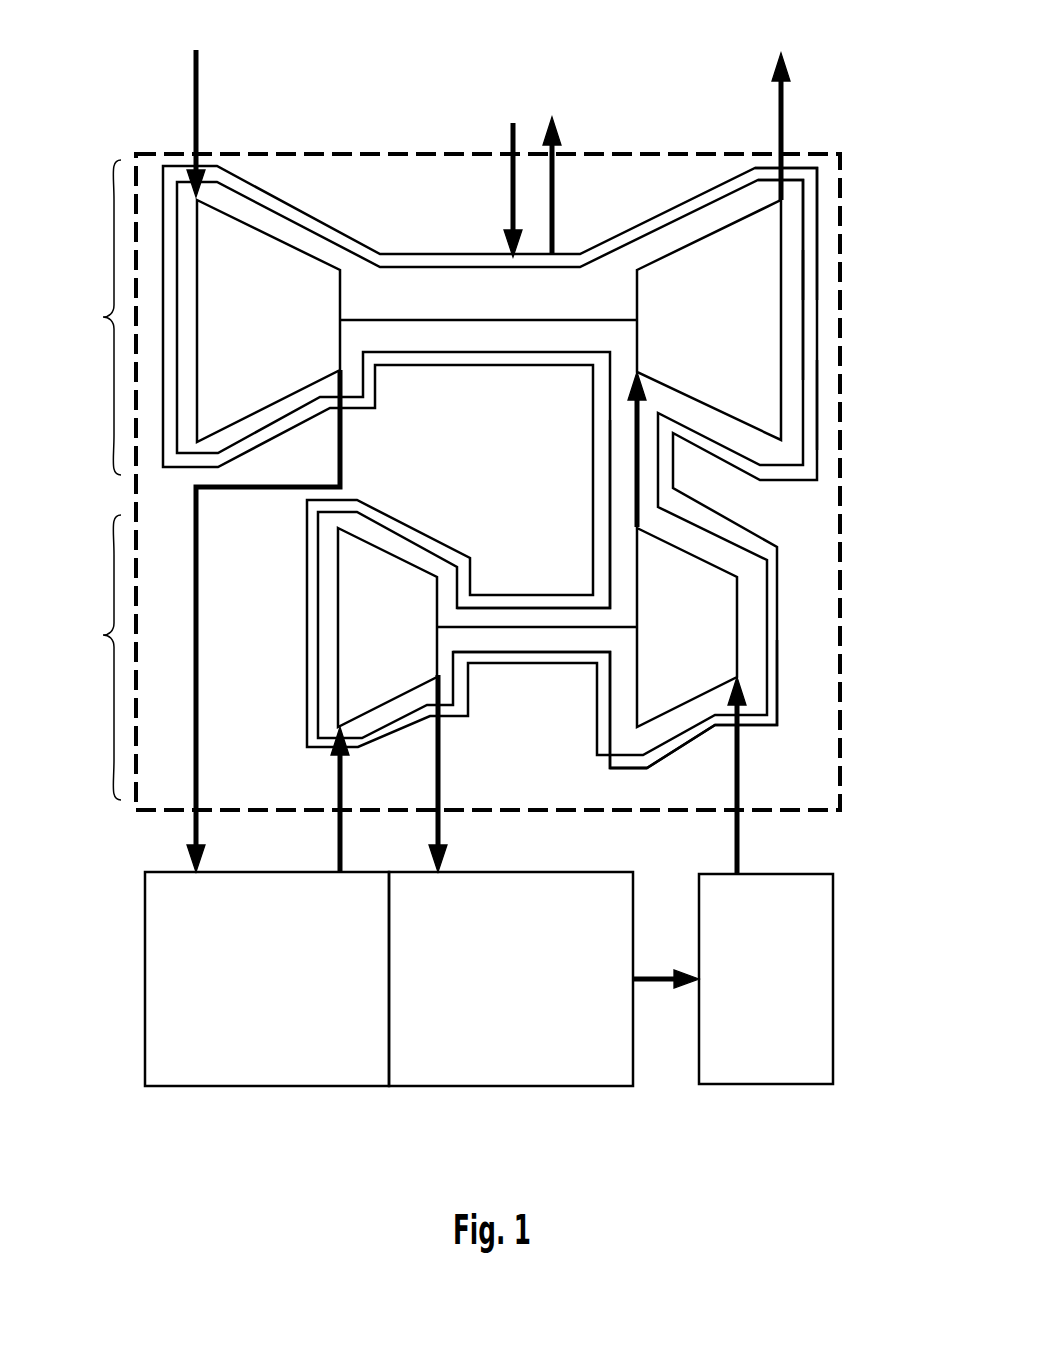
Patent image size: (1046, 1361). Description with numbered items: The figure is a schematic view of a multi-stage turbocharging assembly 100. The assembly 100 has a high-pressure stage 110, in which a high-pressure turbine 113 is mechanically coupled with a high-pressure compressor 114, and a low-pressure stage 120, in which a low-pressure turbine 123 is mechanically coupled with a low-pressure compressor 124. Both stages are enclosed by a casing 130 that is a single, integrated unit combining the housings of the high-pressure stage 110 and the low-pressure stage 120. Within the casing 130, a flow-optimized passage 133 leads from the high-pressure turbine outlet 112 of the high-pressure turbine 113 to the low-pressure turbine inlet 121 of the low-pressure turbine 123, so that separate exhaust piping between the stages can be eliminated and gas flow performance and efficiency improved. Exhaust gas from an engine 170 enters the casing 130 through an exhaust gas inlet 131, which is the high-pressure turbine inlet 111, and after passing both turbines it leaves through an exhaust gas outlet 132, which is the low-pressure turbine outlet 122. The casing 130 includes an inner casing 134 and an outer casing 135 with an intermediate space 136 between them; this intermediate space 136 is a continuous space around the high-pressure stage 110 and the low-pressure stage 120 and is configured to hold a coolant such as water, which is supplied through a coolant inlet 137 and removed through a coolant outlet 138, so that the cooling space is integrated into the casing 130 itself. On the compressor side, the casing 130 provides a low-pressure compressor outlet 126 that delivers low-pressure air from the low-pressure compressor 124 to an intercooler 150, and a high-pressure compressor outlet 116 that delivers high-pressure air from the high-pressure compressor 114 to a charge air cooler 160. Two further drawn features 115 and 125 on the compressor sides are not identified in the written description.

The multi-stage turbocharging assembly 100 is at (640, 138).
The high-pressure stage 110 is at (46, 656).
The low-pressure stage 120 is at (46, 340).
The high-pressure turbine inlet 111 is at (741, 713).
The high-pressure turbine outlet 112 is at (633, 512).
The high-pressure turbine 113 is at (663, 638).
The high-pressure compressor 114 is at (358, 638).
The compressor inlet 115 is at (325, 745).
The high-pressure compressor outlet 116 is at (438, 705).
The low-pressure turbine inlet 121 is at (637, 385).
The low-pressure turbine outlet 122 is at (786, 178).
The low-pressure turbine 123 is at (689, 333).
The low-pressure compressor 124 is at (243, 333).
The turbine inlet 125 is at (200, 157).
The low-pressure compressor outlet 126 is at (338, 405).
The casing 130 is at (903, 440).
The exhaust gas inlet 131 is at (744, 726).
The exhaust gas outlet 132 is at (782, 178).
The passage 133 is at (613, 447).
The inner casing 134 is at (805, 287).
The outer casing 135 is at (818, 397).
The intermediate space 136 is at (808, 330).
The coolant inlet 137 is at (515, 207).
The coolant outlet 138 is at (557, 248).
The intercooler 150 is at (246, 993).
The charge air cooler 160 is at (480, 993).
The engine 170 is at (737, 995).